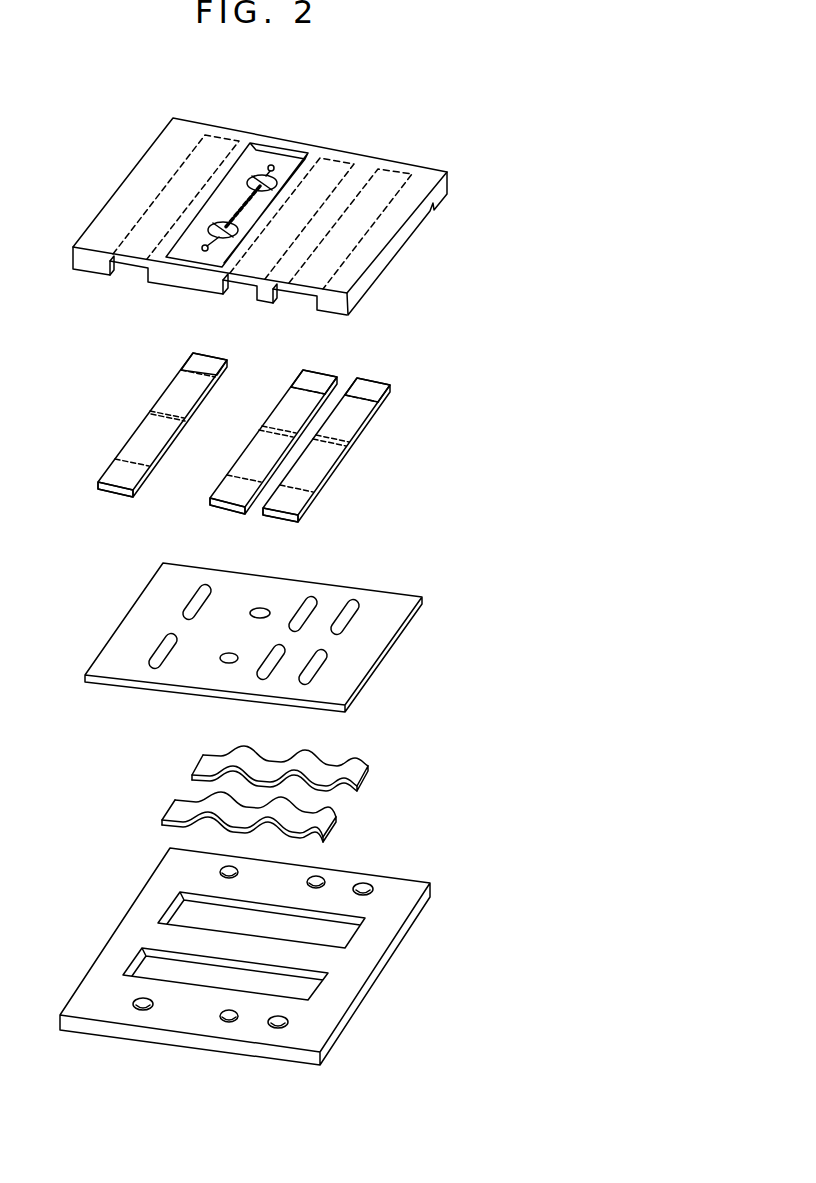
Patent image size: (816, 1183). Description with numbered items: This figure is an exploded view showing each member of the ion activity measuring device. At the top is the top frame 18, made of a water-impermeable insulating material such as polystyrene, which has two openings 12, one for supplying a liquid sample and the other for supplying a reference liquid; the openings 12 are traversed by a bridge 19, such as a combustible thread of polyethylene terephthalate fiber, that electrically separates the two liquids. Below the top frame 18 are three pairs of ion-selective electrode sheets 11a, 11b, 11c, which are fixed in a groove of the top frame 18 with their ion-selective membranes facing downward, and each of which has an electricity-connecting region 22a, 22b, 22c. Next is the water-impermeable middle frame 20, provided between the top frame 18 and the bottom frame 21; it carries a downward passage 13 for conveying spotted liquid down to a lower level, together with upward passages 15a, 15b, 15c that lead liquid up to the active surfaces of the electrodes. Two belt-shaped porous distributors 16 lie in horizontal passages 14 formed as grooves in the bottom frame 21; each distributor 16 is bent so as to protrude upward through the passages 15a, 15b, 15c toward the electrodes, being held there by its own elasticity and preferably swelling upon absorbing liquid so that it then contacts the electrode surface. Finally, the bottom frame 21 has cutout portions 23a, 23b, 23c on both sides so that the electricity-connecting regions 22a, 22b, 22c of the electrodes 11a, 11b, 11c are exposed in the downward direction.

The top frame 18 is at (441, 218).
The bridge 19 is at (255, 178).
The openings 12 is at (272, 181).
The ion-selective electrode sheets 11a is at (167, 402).
The ion-selective electrode sheets 11b is at (280, 420).
The ion-selective electrode sheets 11c is at (360, 420).
The electricity-connecting region 22a is at (218, 357).
The electricity-connecting region 22b is at (328, 378).
The electricity-connecting region 22c is at (383, 382).
The water-impermeable middle frame 20 is at (406, 630).
The upward passage 15a is at (203, 590).
The upward passage 15b is at (312, 602).
The upward passage 15c is at (357, 610).
The downward passage 13 is at (262, 609).
The porous distributor 16 is at (353, 777).
The bottom frame 21 is at (371, 997).
The horizontal passage 14 is at (183, 908).
The cutout portion 23a is at (237, 866).
The cutout portion 23b is at (313, 877).
The cutout portion 23c is at (367, 884).